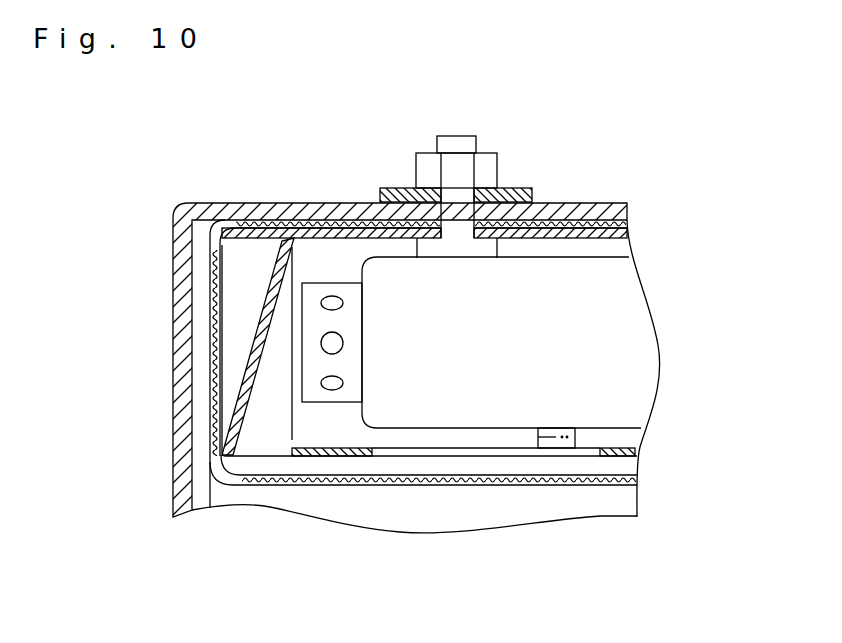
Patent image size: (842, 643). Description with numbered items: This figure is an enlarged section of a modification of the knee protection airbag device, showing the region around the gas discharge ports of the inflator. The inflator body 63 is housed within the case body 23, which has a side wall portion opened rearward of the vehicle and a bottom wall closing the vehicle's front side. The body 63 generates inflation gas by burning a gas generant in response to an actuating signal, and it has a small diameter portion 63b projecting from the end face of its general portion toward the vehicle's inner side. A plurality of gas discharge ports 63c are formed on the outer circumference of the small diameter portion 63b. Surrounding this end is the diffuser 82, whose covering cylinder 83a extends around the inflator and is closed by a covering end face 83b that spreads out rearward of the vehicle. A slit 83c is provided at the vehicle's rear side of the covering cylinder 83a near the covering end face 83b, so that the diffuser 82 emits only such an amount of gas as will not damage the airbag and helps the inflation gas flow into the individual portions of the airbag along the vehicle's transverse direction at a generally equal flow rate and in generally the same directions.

The case body 23 is at (285, 200).
The inflator body 63 is at (627, 296).
The small diameter portion 63b is at (352, 370).
The gas discharge ports 63c is at (334, 343).
The diffuser 82 is at (433, 463).
The covering cylinder 83a is at (327, 457).
The covering end face 83b is at (255, 340).
The slit 83c is at (273, 440).